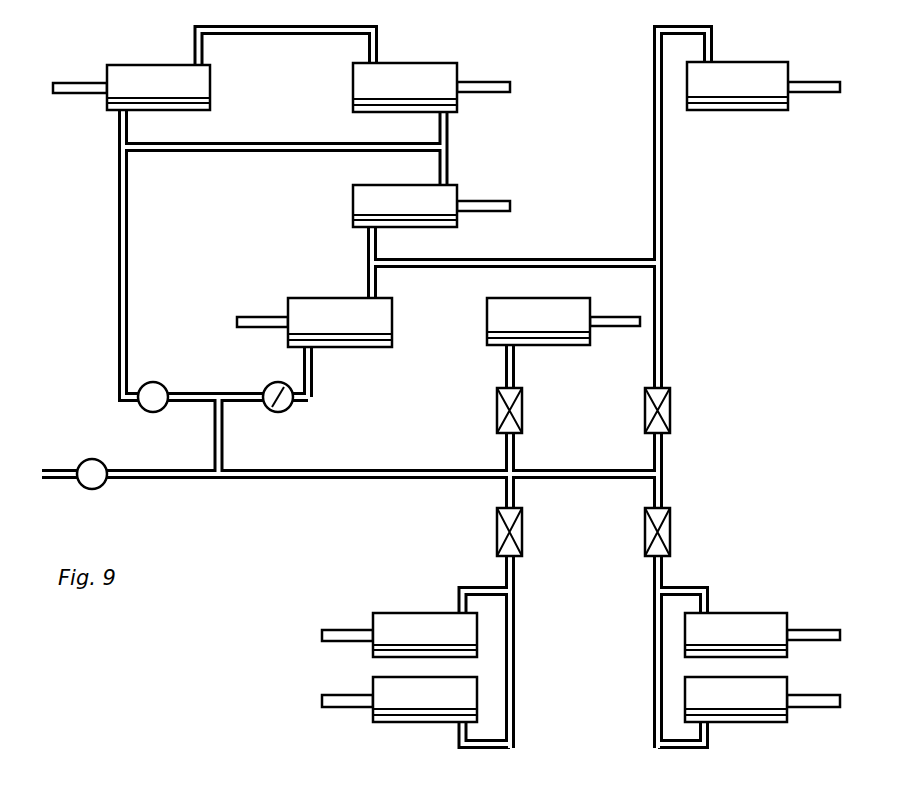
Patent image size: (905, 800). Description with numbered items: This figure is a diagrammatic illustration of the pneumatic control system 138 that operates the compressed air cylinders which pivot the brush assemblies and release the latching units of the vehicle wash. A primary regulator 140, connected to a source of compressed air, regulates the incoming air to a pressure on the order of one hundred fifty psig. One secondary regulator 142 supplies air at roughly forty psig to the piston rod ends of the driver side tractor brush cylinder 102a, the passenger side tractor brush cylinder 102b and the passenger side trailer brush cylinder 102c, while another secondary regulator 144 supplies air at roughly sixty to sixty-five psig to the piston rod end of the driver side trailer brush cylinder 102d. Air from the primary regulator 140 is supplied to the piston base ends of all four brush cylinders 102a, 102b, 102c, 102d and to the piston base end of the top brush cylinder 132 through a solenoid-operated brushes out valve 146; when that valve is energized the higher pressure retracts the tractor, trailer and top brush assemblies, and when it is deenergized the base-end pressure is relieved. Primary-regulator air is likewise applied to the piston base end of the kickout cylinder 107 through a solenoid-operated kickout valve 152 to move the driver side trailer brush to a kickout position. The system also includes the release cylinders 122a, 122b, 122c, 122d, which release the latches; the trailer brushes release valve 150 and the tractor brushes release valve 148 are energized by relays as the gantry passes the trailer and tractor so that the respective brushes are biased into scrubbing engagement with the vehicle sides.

The driver side tractor brush cylinder 102a is at (177, 48).
The passenger side tractor brush cylinder 102b is at (408, 70).
The passenger side trailer brush cylinder 102c is at (353, 213).
The driver side trailer brush cylinder 102d is at (352, 315).
The kickout cylinder 107 is at (550, 308).
The release cylinder 122a is at (416, 613).
The release cylinder 122b is at (422, 690).
The release cylinder 122c is at (752, 625).
The release cylinder 122d is at (757, 690).
The top brush cylinder 132 is at (724, 80).
The pneumatic control system 138 is at (690, 296).
The primary regulator 140 is at (92, 460).
The secondary regulator 142 is at (158, 392).
The secondary regulator 144 is at (272, 406).
The brushes out valve 146 is at (672, 412).
The tractor brushes release valve 148 is at (497, 523).
The trailer brushes release valve 150 is at (662, 531).
The kickout valve 152 is at (497, 420).